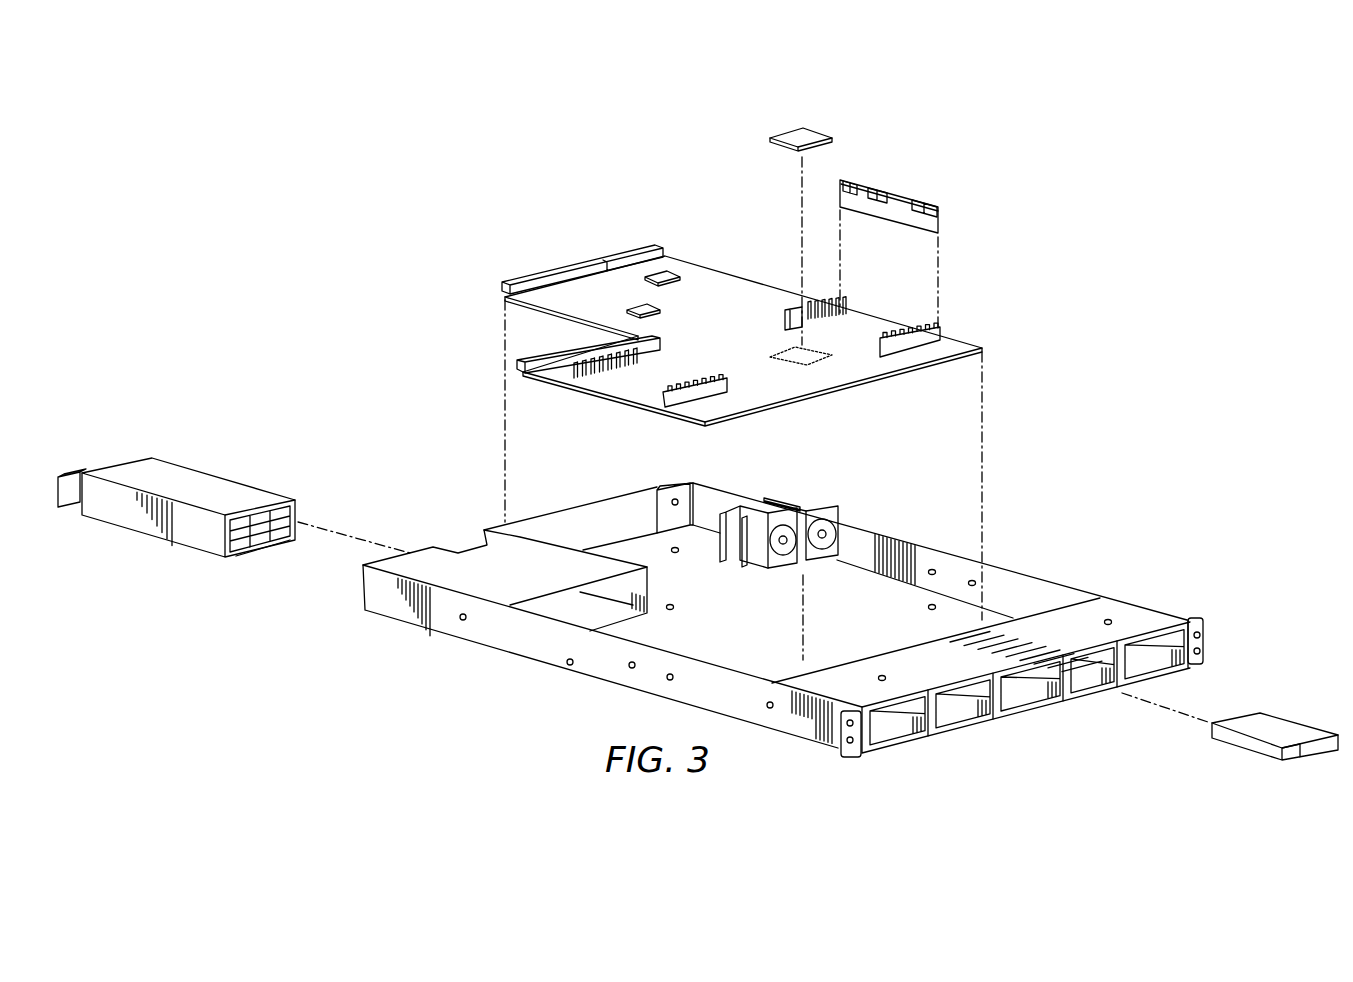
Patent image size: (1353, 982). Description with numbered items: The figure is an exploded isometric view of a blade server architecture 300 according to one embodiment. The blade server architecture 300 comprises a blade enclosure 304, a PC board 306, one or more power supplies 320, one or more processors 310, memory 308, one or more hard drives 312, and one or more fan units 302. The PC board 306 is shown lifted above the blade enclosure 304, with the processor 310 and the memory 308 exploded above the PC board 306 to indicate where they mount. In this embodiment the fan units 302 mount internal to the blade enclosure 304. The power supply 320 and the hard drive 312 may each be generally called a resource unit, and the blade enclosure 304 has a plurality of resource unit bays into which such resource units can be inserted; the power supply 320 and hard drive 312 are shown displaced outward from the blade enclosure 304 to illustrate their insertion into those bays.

The blade server architecture 300 is at (540, 184).
The fan unit 302 is at (762, 563).
The blade enclosure 304 is at (1127, 618).
The PC board 306 is at (643, 384).
The memory 308 is at (898, 197).
The processor 310 is at (807, 133).
The hard drive 312 is at (1278, 730).
The power supply 320 is at (127, 513).